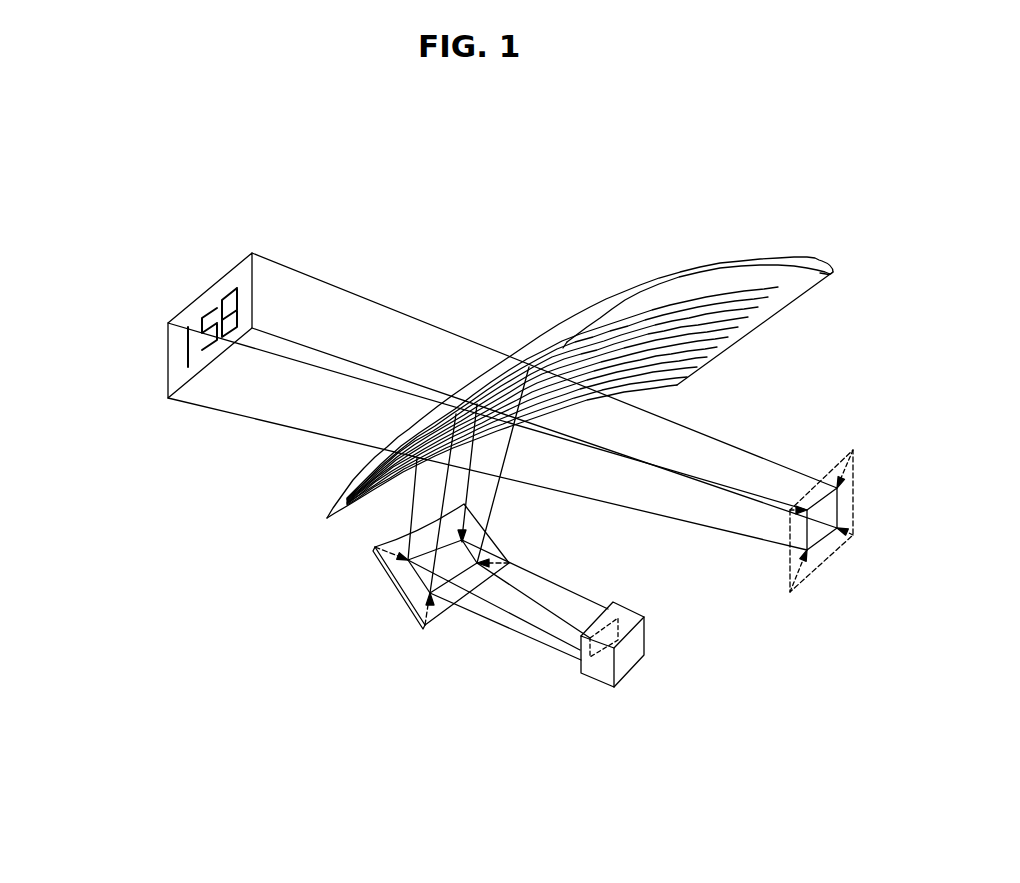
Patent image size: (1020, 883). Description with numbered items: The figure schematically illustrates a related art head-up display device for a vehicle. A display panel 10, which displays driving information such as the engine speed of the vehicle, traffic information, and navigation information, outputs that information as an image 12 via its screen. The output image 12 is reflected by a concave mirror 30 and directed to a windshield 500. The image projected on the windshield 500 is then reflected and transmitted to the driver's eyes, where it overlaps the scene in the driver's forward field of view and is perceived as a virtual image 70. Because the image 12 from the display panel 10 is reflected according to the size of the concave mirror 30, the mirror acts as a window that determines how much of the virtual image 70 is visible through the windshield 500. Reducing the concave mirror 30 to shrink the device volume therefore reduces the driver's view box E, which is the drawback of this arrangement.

The virtual image 70 is at (168, 375).
The windshield 500 is at (808, 258).
The concave mirror 30 is at (407, 601).
The display panel 10 is at (634, 642).
The image 12 is at (597, 658).
The driver's view box E is at (822, 545).